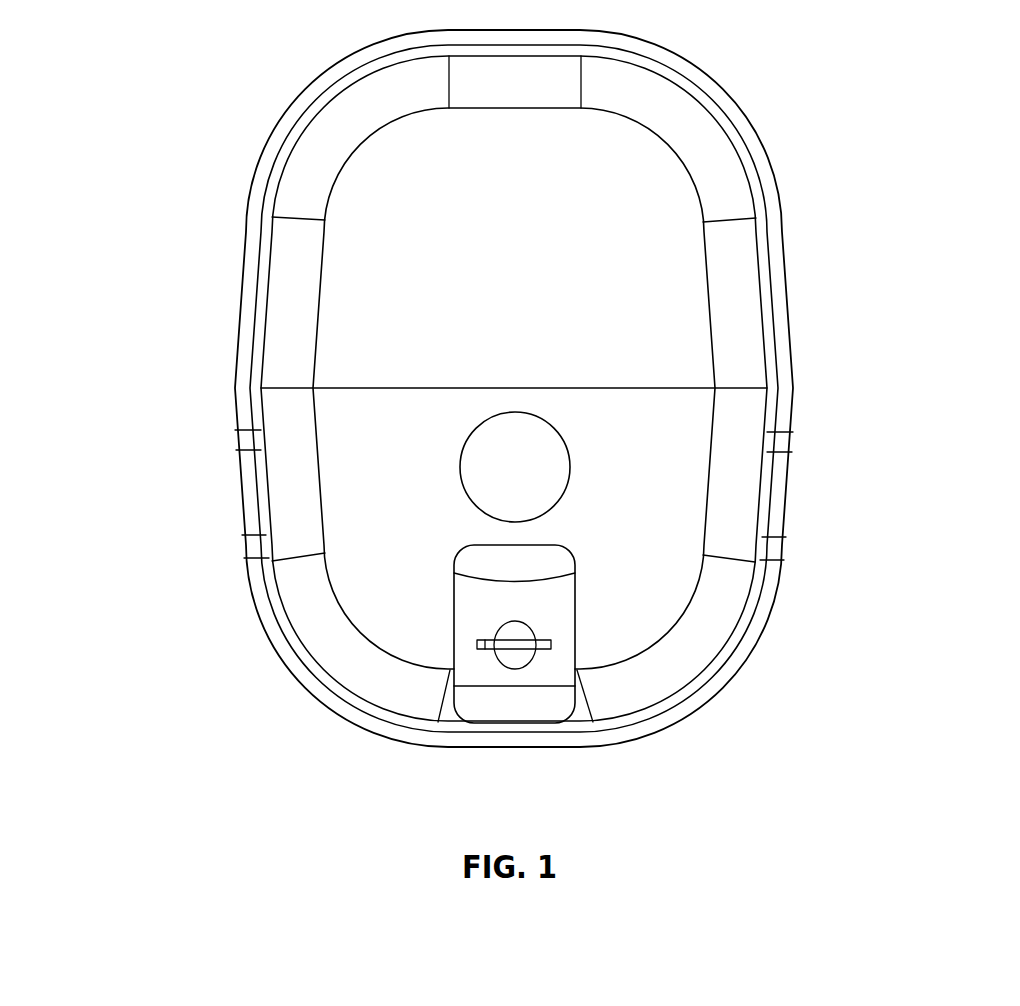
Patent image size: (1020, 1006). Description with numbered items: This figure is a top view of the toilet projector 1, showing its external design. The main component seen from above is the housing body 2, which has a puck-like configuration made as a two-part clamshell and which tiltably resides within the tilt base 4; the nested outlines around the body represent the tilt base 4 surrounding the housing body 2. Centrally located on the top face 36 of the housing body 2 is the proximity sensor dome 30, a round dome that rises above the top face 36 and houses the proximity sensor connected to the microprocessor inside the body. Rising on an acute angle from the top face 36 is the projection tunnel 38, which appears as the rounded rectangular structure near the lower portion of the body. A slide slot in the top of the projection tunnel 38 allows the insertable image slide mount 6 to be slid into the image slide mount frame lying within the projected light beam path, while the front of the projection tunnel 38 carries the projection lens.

The toilet projector 1 is at (110, 250).
The housing body 2 is at (612, 142).
The tilt base 4 is at (775, 197).
The insertable image slide mount 6 is at (483, 640).
The proximity sensor dome 30 is at (527, 429).
The top face 36 is at (348, 468).
The projection tunnel 38 is at (558, 612).